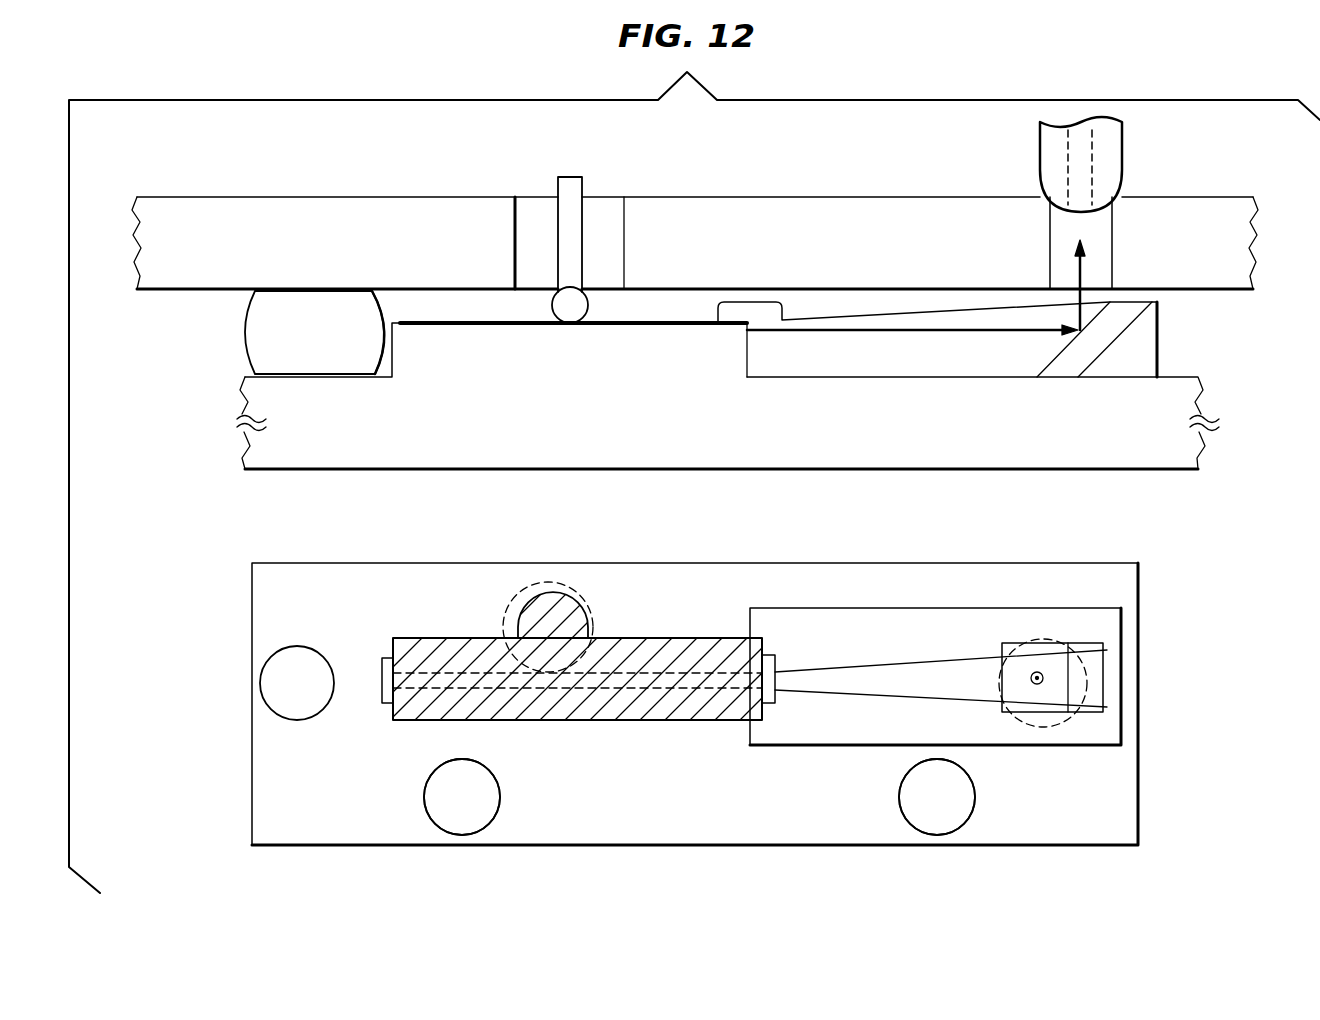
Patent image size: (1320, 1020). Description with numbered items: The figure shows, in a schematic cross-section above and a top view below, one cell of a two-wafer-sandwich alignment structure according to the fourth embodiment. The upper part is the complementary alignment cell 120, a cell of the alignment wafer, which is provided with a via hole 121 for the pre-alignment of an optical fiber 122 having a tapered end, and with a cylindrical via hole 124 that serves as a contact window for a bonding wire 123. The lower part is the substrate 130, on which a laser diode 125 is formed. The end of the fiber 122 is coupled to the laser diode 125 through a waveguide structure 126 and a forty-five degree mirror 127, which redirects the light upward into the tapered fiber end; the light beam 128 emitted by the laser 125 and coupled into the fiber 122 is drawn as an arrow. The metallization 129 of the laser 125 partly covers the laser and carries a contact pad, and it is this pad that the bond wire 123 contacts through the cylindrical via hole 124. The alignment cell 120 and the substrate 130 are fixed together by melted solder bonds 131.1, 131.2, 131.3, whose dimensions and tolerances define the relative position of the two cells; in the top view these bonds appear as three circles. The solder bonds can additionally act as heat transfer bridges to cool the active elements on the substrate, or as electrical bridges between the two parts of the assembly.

The complementary alignment cell 120 is at (198, 273).
The via hole 121 is at (1103, 228).
The optical fiber 122 is at (1052, 153).
The bonding wire 123 is at (577, 190).
The cylindrical via hole 124 is at (533, 212).
The laser diode 125 is at (645, 355).
The waveguide structure 126 is at (990, 363).
The 45 degree mirror 127 is at (1107, 330).
The light beam 128 is at (907, 332).
The metallization 129 is at (477, 323).
The substrate 130 is at (313, 458).
The solder bond 131.1 is at (285, 333).
The solder bond 131.2 is at (460, 812).
The solder bond 131.3 is at (957, 808).